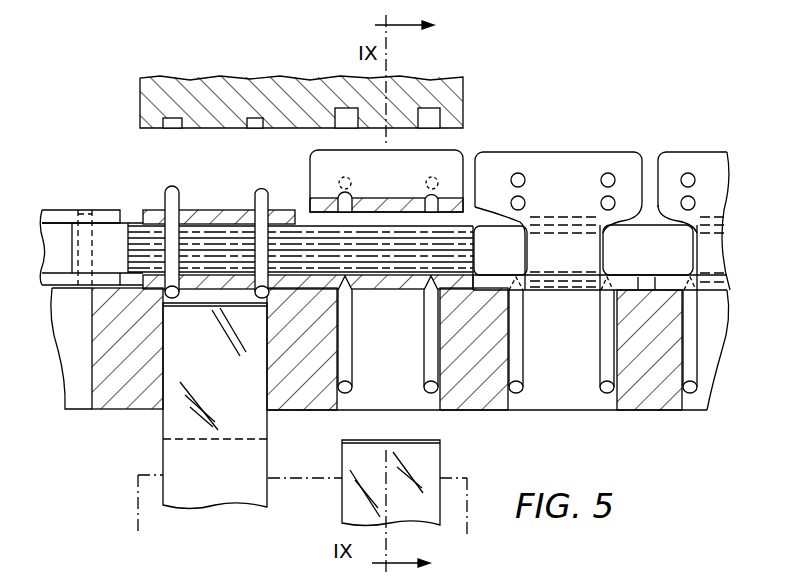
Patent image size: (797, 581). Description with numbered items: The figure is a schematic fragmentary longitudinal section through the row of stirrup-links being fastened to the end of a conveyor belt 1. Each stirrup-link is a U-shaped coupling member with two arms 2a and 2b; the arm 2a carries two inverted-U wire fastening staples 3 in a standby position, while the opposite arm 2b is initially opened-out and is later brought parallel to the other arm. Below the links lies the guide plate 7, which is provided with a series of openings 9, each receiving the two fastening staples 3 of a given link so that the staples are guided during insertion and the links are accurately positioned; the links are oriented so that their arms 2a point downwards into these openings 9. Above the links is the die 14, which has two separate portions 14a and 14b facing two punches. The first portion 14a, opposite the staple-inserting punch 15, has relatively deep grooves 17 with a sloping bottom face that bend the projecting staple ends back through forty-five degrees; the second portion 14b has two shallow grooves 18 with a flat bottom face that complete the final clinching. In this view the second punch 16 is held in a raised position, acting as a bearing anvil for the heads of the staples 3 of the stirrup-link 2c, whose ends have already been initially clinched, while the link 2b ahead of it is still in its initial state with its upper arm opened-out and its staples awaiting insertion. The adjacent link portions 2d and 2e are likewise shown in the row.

The conveyor belt 1 is at (126, 258).
The stirrup-link arm 2a is at (384, 290).
The stirrup-link arm 2b is at (392, 205).
The stirrup-link 2c is at (203, 195).
The side wall of frame 2d is at (470, 196).
The apertured plate of frame 2e is at (560, 150).
The fastening staples 3 is at (86, 200).
The guide plate 7 is at (138, 402).
The openings 9 is at (268, 395).
The die 14 is at (126, 86).
The first die portion 14a is at (400, 96).
The second die portion 14b is at (222, 90).
The punch 15 is at (427, 463).
The second punch 16 is at (218, 381).
The grooves 17 is at (428, 121).
The grooves 18 is at (255, 123).